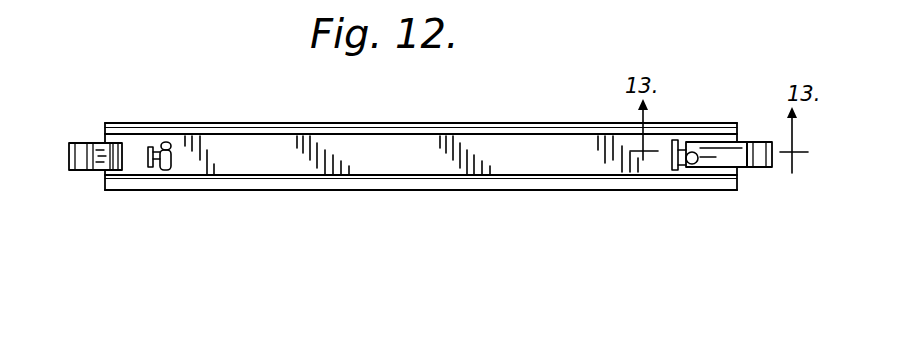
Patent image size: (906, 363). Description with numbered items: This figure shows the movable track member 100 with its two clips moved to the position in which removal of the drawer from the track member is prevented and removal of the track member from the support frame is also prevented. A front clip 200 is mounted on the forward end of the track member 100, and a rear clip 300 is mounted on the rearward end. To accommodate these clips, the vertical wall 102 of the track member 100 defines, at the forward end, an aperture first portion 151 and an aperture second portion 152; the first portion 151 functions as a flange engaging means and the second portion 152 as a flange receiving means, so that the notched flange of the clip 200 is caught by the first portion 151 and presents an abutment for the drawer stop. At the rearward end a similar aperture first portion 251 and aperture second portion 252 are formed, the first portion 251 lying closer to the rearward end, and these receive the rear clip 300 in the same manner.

The track member 100 is at (400, 121).
The vertical wall 102 is at (457, 148).
The rear clip 300 is at (72, 140).
The aperture second portion 252 is at (168, 152).
The aperture first portion 251 is at (173, 166).
The front clip 200 is at (758, 137).
The aperture second portion 152 is at (683, 163).
The aperture first portion 151 is at (697, 163).